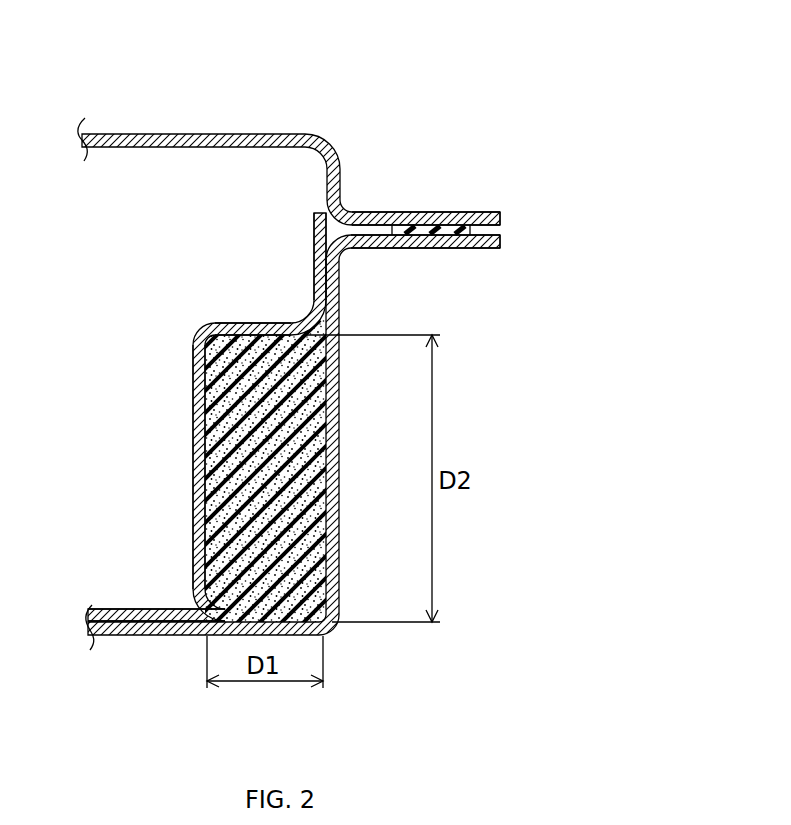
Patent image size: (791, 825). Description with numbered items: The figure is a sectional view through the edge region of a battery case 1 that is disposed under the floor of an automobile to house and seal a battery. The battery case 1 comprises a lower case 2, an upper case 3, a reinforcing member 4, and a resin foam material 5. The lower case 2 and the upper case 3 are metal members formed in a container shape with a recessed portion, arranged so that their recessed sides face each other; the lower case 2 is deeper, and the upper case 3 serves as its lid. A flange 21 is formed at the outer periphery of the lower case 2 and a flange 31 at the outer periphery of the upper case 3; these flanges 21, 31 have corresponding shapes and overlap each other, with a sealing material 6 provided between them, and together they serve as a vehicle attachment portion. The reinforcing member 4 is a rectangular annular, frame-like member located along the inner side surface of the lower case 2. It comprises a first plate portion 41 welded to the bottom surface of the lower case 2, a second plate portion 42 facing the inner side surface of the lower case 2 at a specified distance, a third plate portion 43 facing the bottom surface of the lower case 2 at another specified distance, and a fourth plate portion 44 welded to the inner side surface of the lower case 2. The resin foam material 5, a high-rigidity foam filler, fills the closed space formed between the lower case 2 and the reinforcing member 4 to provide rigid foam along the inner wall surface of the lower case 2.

The battery case 1 is at (418, 107).
The lower case 2 is at (164, 638).
The flange 21 is at (472, 249).
The upper case 3 is at (172, 133).
The flange 31 is at (476, 212).
The reinforcing member 4 is at (185, 582).
The first plate portion 41 is at (112, 610).
The second plate portion 42 is at (193, 460).
The third plate portion 43 is at (250, 323).
The fourth plate portion 44 is at (314, 285).
The resin foam material 5 is at (318, 468).
The sealing material 6 is at (462, 230).